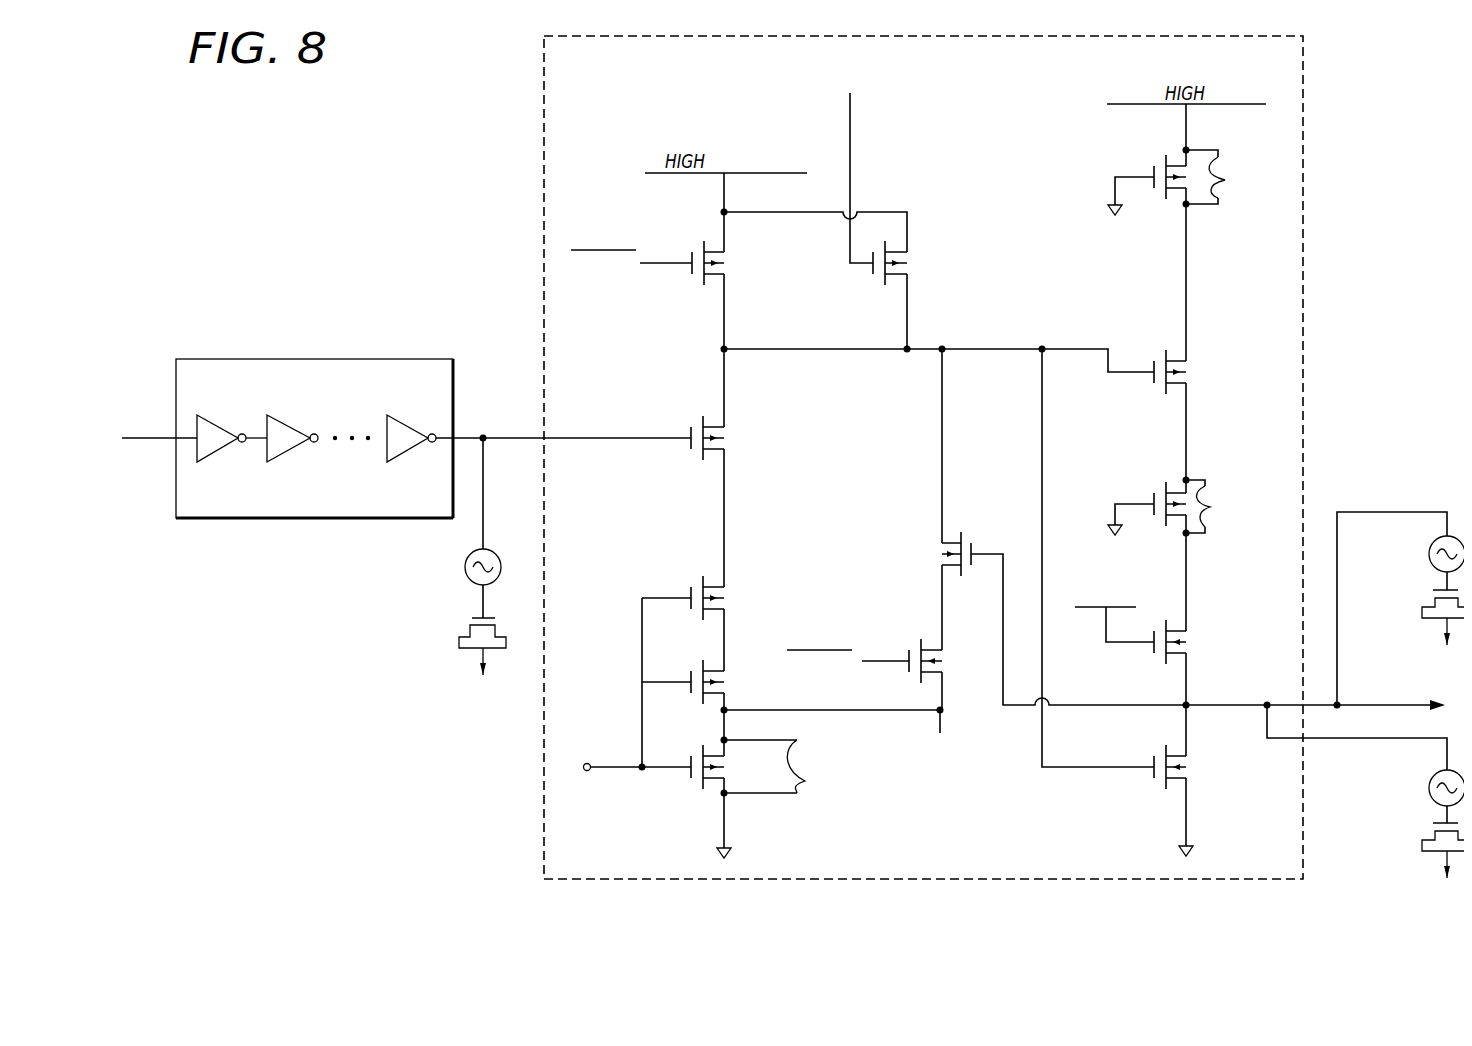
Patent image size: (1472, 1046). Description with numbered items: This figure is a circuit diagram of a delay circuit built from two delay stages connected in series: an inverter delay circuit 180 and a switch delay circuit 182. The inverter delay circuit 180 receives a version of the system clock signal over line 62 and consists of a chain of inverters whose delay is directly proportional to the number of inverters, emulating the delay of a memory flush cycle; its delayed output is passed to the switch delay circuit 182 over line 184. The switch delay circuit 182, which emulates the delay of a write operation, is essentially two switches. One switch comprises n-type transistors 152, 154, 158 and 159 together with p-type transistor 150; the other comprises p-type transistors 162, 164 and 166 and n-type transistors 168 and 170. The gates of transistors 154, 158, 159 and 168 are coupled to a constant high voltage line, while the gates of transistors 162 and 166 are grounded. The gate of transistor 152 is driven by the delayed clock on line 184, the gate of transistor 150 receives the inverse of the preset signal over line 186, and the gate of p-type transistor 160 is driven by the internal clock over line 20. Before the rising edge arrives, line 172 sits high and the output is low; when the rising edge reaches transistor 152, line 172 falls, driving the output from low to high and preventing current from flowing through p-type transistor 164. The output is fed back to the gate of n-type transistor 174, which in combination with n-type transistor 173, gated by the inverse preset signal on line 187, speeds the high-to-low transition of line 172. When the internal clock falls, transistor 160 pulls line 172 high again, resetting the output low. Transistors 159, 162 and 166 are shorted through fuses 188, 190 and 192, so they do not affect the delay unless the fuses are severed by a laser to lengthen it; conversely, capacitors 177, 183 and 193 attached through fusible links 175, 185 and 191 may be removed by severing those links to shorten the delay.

The internal clock line 20 is at (850, 117).
The line 62 is at (155, 438).
The p-type transistor 150 is at (712, 278).
The n-type transistor 152 is at (712, 452).
The n-type transistor 154 is at (713, 585).
The n-type transistor 158 is at (713, 671).
The n-type transistor 159 is at (710, 780).
The p-type transistor 160 is at (895, 278).
The p-type transistor 162 is at (1173, 190).
The p-type transistor 164 is at (1173, 359).
The p-type transistor 166 is at (1172, 491).
The n-type transistor 168 is at (1172, 629).
The n-type transistor 170 is at (1172, 781).
The line 172 is at (990, 348).
The n-type transistor 173 is at (928, 648).
The n-type transistor 174 is at (950, 541).
The fusible link 175 is at (1428, 790).
The capacitor 177 is at (1420, 846).
The inverter delay circuit 180 is at (287, 359).
The switch delay circuit 182 is at (544, 106).
The capacitor 183 is at (460, 642).
The line 184 is at (582, 438).
The fusible link 185 is at (465, 568).
The line 186 is at (658, 262).
The line 187 is at (876, 661).
The fuse 188 is at (805, 781).
The fuse 190 is at (1225, 180).
The fusible link 191 is at (1428, 556).
The fuse 192 is at (1210, 507).
The capacitor 193 is at (1420, 612).